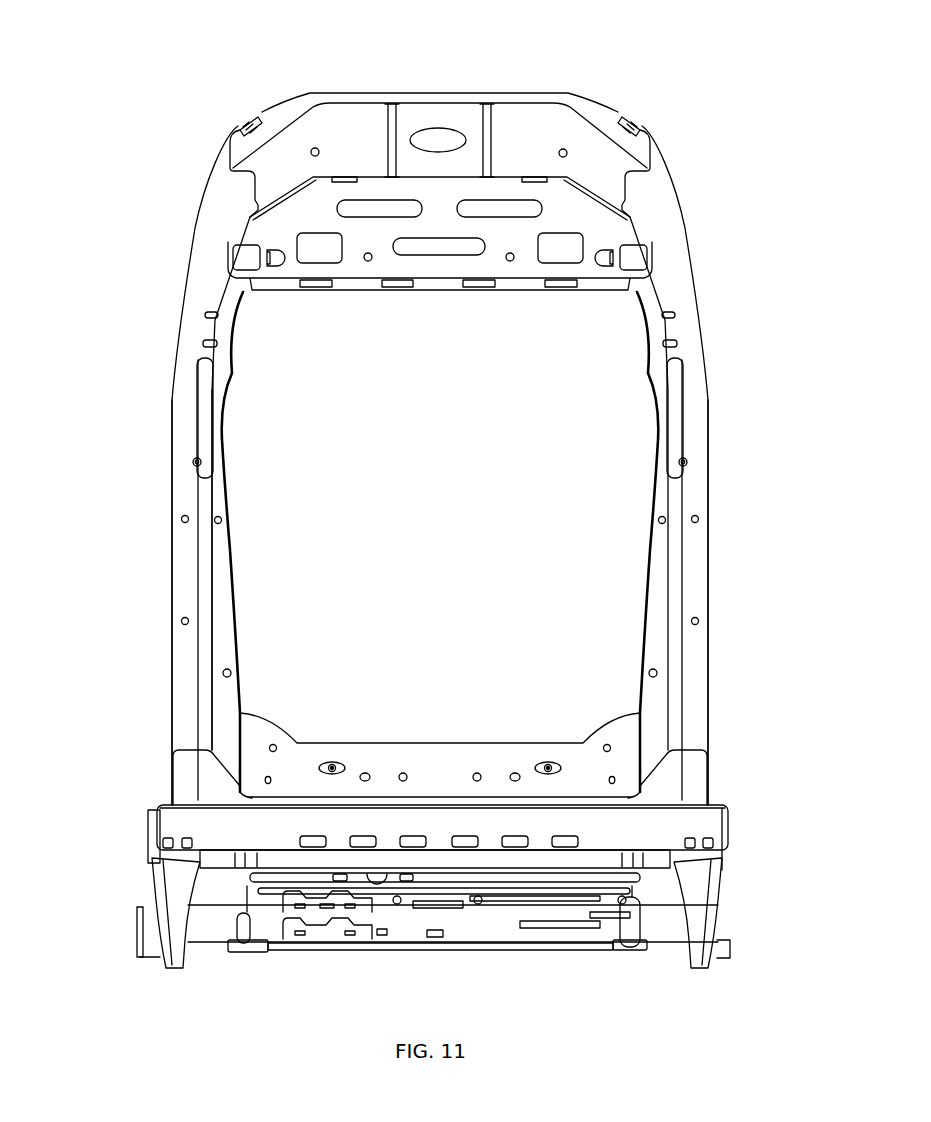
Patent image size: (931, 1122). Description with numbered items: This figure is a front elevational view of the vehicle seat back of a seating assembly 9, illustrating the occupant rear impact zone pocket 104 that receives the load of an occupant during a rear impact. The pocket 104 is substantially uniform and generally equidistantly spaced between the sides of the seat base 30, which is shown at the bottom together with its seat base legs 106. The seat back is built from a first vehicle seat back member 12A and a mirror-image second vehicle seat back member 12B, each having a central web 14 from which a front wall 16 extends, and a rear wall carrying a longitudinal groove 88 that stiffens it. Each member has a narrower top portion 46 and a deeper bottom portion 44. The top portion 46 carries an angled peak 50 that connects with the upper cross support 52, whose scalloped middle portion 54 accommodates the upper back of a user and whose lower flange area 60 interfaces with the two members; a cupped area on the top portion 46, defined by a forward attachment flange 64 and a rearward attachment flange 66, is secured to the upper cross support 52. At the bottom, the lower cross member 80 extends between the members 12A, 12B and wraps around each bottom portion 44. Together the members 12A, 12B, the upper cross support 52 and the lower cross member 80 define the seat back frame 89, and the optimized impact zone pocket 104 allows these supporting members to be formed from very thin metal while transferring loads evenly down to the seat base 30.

The seating assembly 9 is at (146, 50).
The occupant rear impact zone pocket 104 is at (331, 168).
The scalloped middle portion 54 is at (437, 128).
The upper cross support 52 is at (598, 123).
The rearward attachment flange 66 is at (243, 123).
The angled peak 50 is at (226, 146).
The forward attachment flange 64 is at (230, 198).
The top portion 46 is at (178, 286).
The lower flange area 60 is at (433, 292).
The central web 14 is at (642, 334).
The groove 88 is at (200, 432).
The second vehicle seat back member 12B is at (170, 452).
The first vehicle seat back member 12A is at (710, 452).
The front wall 16 is at (186, 578).
The seat back frame 89 is at (162, 640).
The bottom portion 44 is at (152, 740).
The lower cross member 80 is at (371, 743).
The seat base 30 is at (148, 835).
The seat base legs 106 is at (170, 972).